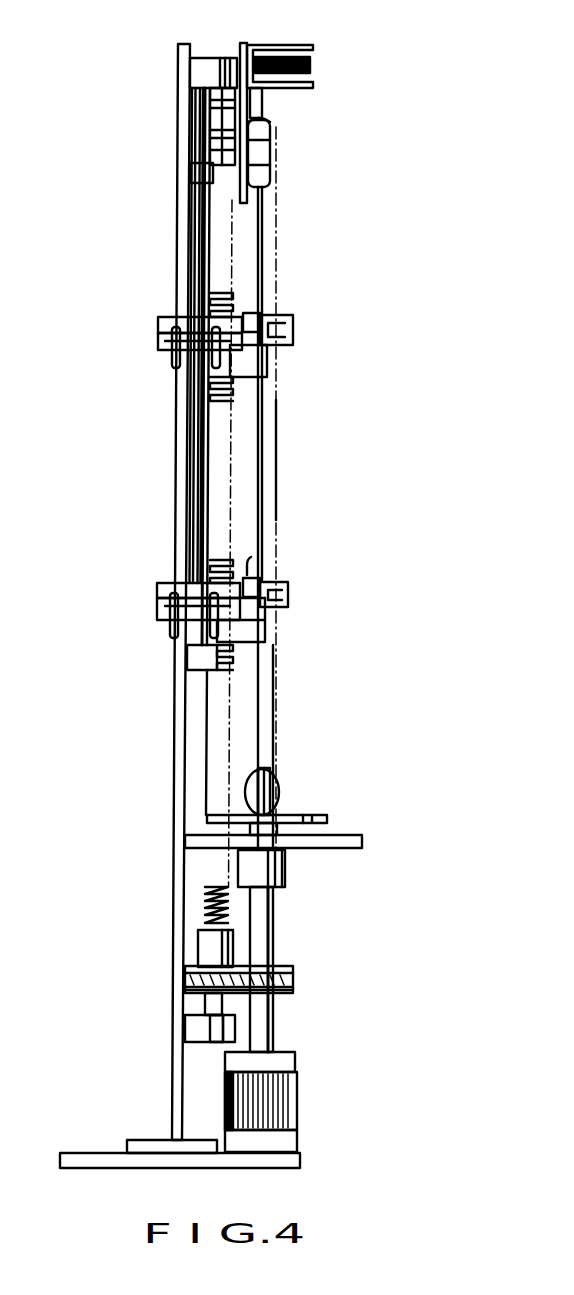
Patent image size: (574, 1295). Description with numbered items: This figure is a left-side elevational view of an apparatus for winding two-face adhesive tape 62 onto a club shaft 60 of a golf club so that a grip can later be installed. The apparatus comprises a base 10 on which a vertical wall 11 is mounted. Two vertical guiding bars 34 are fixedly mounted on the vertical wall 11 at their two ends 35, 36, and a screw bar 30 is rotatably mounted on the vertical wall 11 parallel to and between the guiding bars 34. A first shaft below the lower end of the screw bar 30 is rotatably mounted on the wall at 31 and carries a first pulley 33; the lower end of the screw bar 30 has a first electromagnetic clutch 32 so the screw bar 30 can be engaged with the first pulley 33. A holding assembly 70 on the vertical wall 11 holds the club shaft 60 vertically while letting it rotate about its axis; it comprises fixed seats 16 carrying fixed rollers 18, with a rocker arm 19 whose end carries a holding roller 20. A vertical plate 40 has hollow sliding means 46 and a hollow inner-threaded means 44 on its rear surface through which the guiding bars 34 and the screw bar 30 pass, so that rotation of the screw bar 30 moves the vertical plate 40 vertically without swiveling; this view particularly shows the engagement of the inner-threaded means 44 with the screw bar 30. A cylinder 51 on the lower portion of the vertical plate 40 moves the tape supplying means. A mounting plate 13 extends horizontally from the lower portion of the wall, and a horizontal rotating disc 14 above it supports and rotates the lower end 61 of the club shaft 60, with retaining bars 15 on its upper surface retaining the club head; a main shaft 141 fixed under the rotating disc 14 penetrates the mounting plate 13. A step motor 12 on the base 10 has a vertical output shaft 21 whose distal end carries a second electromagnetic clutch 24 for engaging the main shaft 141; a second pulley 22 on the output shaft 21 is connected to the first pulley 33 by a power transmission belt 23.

The base 10 is at (300, 1162).
The vertical wall 11 is at (183, 1015).
The step motor 12 is at (277, 1100).
The mounting plate 13 is at (362, 843).
The rotating disc 14 is at (327, 820).
The main shaft 141 is at (275, 830).
The retaining bar 15 is at (265, 768).
The fixed seat 16 is at (288, 597).
The fixed roller 18 is at (250, 570).
The rocker arm 19 is at (293, 330).
The holding roller 20 is at (270, 580).
The output shaft 21 is at (262, 930).
The second pulley 22 is at (293, 970).
The power transmission belt 23 is at (293, 990).
The second electromagnetic clutch 24 is at (285, 870).
The screw bar 30 is at (207, 905).
The mounting location of first shaft 31 is at (215, 1028).
The first electromagnetic clutch 32 is at (200, 937).
The first pulley 33 is at (192, 968).
The vertical guiding bar 34 is at (200, 487).
The end 35 is at (195, 658).
The end 36 is at (205, 62).
The vertical plate 40 is at (235, 160).
The hollow inner-threaded means 44 is at (227, 120).
The hollow sliding means 46 is at (205, 178).
The cylinder 51 is at (270, 128).
The club shaft 60 is at (262, 460).
The lower end of club shaft 61 is at (282, 790).
The two-face adhesive tape 62 is at (315, 68).
The holding assembly 70 is at (155, 362).